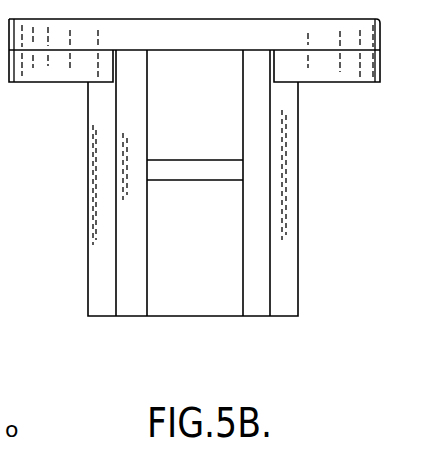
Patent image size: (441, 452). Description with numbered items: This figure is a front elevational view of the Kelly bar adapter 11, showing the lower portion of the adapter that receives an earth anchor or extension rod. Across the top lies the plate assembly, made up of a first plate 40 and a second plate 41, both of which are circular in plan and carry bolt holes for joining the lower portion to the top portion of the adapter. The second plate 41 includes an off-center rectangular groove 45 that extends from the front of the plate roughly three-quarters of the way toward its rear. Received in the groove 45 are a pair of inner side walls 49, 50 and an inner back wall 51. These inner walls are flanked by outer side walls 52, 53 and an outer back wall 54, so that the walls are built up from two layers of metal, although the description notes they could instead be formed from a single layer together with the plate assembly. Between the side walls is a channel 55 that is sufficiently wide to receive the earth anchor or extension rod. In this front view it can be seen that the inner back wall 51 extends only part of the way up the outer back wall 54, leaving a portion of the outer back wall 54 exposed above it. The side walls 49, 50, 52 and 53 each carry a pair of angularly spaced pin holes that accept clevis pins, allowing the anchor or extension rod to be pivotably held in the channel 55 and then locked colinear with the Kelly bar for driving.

The Kelly bar adapter 11 is at (333, 180).
The first plate 40 is at (368, 41).
The second plate 41 is at (368, 71).
The rectangular groove 45 is at (118, 70).
The inner side wall 49 is at (126, 306).
The inner side wall 50 is at (253, 303).
The inner back wall 51 is at (204, 263).
The outer side wall 52 is at (103, 306).
The outer side wall 53 is at (278, 301).
The outer back wall 54 is at (195, 148).
The channel 55 is at (147, 297).